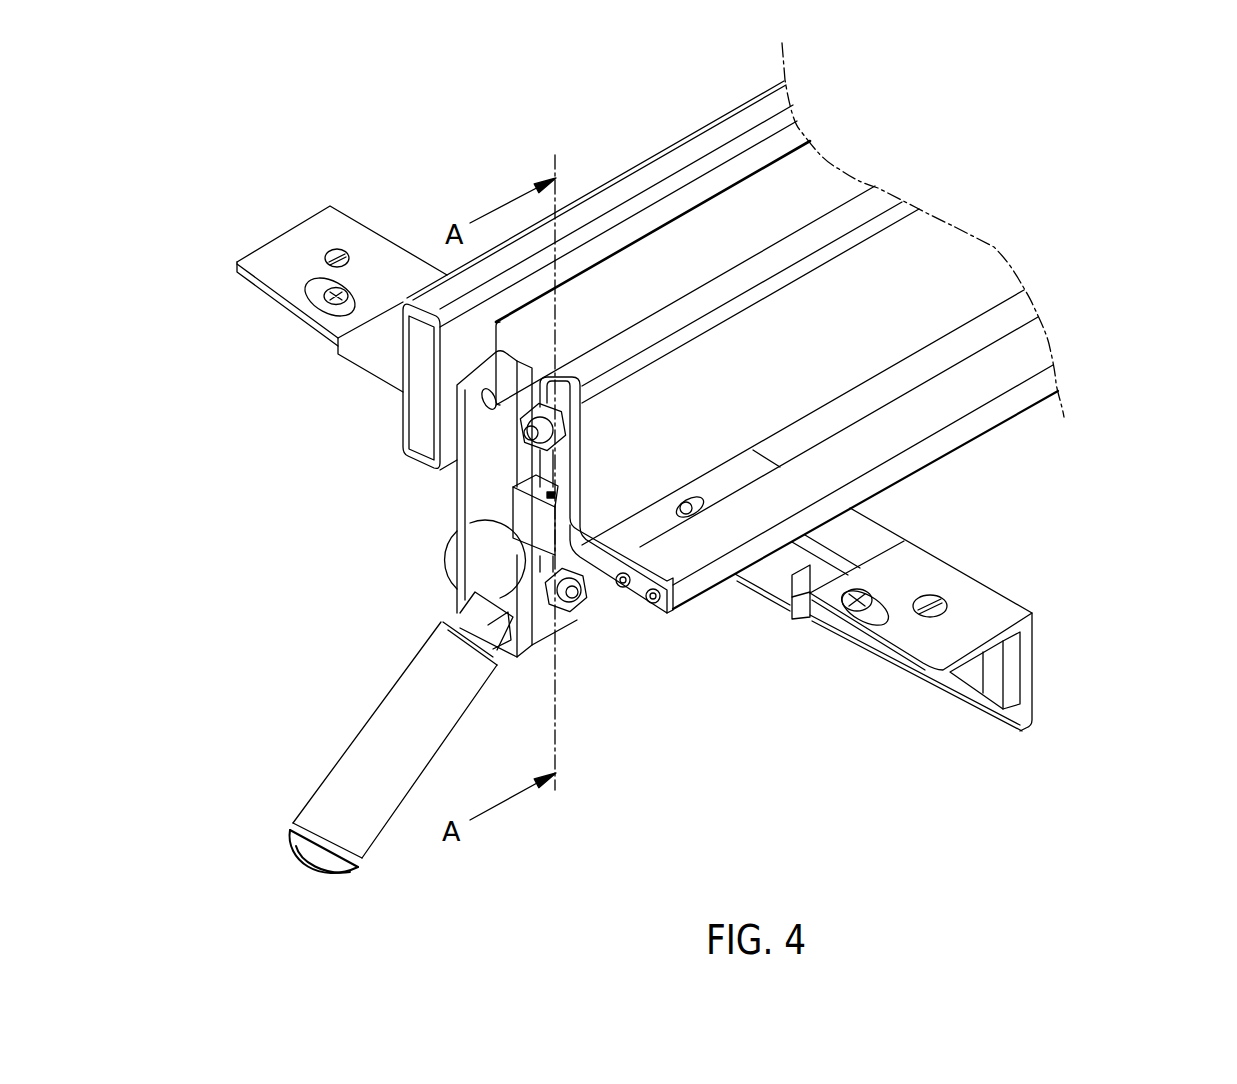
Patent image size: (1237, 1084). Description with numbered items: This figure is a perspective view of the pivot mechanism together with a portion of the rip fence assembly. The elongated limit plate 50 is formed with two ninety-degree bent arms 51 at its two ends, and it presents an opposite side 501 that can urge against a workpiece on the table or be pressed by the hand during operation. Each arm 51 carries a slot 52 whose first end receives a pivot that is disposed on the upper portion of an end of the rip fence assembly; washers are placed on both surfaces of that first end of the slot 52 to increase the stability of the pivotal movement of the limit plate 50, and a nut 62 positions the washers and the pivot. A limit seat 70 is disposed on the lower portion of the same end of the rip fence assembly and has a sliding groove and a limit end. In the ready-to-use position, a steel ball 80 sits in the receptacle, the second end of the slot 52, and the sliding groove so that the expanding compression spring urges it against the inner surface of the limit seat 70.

The limit plate 50 is at (990, 377).
The side of the limit plate 501 is at (907, 462).
The bent arm 51 is at (600, 563).
The slot 52 is at (550, 475).
The nut 62 is at (517, 428).
The limit seat 70 is at (527, 512).
The steel ball 80 is at (553, 500).